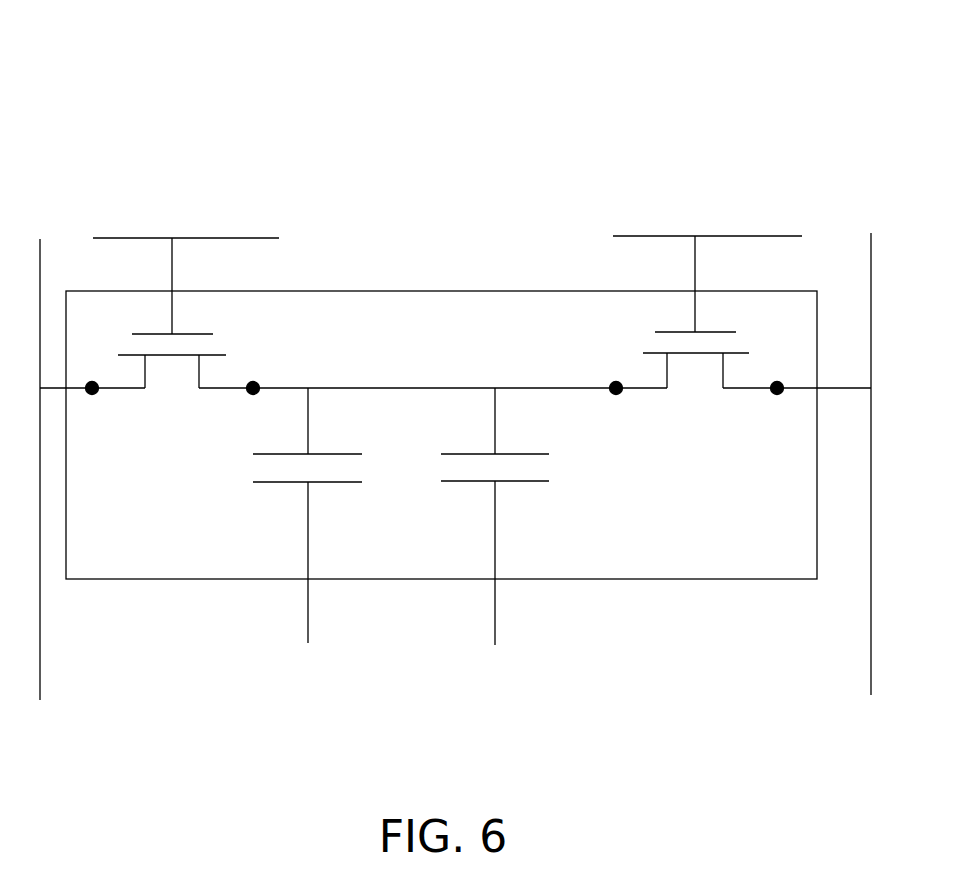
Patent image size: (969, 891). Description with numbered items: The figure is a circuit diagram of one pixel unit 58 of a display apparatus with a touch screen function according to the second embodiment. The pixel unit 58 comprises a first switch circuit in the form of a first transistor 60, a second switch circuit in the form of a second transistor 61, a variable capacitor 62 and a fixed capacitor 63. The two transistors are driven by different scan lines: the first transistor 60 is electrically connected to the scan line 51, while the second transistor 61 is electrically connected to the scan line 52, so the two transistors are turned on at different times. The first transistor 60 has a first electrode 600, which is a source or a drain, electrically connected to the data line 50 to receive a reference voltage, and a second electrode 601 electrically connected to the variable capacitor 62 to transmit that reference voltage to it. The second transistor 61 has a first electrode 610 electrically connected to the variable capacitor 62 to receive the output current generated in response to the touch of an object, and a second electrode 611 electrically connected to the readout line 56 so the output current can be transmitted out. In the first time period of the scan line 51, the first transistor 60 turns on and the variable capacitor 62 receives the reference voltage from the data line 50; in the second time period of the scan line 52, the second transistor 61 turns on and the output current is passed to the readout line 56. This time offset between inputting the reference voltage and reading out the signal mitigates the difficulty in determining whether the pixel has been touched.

The data line 50 is at (40, 592).
The readout line 56 is at (871, 564).
The scan line 51 is at (199, 238).
The scan line 52 is at (722, 236).
The pixel unit 58 is at (426, 291).
The first transistor 60 is at (252, 353).
The second transistor 61 is at (617, 352).
The first electrode 600 is at (97, 393).
The second electrode 601 is at (256, 386).
The first electrode 610 is at (614, 386).
The second electrode 611 is at (774, 392).
The variable capacitor 62 is at (566, 476).
The fixed capacitor 63 is at (246, 476).